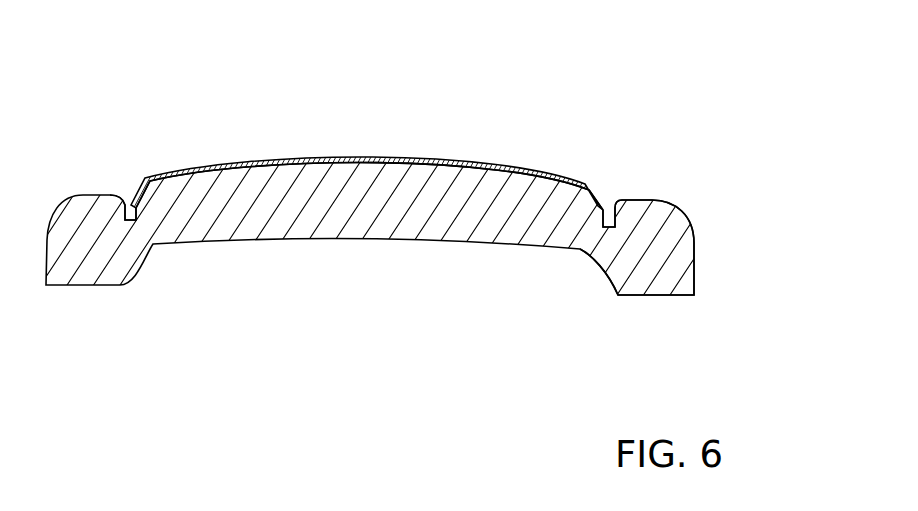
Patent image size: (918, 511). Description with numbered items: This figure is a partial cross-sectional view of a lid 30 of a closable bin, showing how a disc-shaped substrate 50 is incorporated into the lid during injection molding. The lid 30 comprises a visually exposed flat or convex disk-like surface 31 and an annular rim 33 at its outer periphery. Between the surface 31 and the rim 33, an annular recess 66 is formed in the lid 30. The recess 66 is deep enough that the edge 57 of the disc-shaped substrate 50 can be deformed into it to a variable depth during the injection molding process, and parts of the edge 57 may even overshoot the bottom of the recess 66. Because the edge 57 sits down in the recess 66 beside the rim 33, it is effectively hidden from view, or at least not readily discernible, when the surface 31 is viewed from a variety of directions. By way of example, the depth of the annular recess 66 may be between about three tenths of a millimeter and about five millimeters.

The lid 30 is at (449, 197).
The disk-like surface 31 is at (297, 160).
The disc-shaped substrate 50 is at (410, 158).
The annular recess 66 is at (132, 206).
The edge 57 is at (607, 207).
The annular rim 33 is at (667, 265).